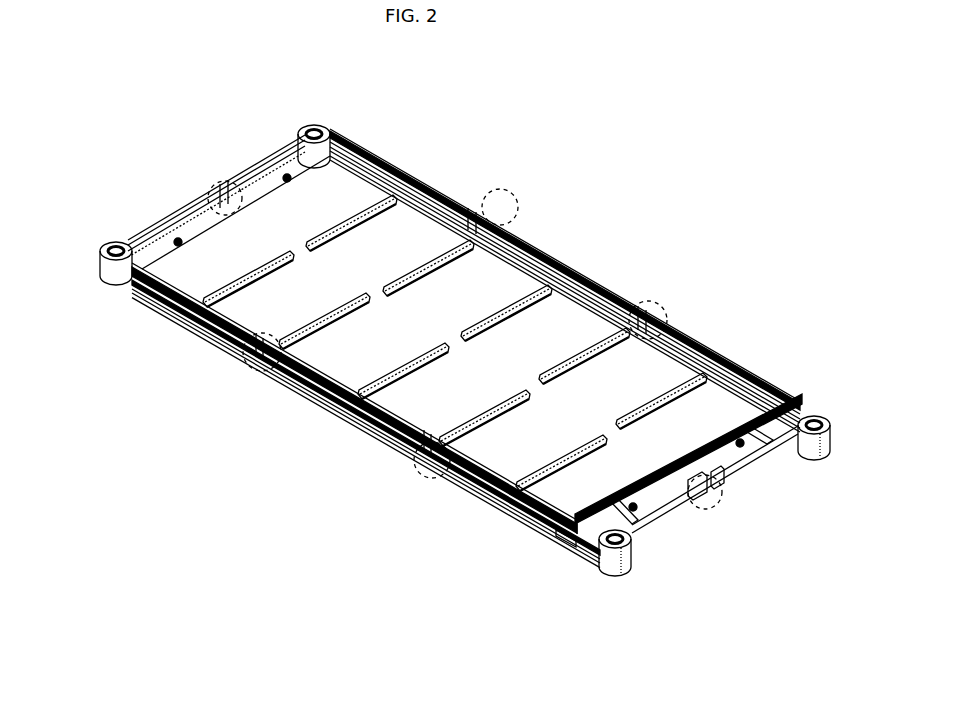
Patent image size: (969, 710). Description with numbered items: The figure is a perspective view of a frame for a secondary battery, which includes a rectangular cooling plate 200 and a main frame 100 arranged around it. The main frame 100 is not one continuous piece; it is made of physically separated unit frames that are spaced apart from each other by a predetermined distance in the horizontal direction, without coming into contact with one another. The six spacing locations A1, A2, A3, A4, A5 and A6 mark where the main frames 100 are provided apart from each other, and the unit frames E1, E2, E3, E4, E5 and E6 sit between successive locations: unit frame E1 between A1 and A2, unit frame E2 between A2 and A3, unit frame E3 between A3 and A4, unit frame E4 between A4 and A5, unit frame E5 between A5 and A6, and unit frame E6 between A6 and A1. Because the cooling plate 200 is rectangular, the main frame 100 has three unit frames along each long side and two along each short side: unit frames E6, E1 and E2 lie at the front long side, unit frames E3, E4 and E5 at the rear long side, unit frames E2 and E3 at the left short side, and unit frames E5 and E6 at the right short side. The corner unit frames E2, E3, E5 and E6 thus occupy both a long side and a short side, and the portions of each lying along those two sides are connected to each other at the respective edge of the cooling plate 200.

The main frame 100 is at (393, 70).
The cooling plate 200 is at (357, 187).
The spacing location A1 is at (422, 482).
The spacing location A2 is at (238, 369).
The spacing location A3 is at (212, 174).
The spacing location A4 is at (506, 184).
The spacing location A5 is at (680, 305).
The spacing location A6 is at (726, 506).
The unit frame E1 is at (307, 420).
The unit frame E2 is at (74, 278).
The unit frame E3 is at (338, 118).
The unit frame E4 is at (606, 258).
The unit frame E5 is at (843, 412).
The unit frame E6 is at (594, 570).